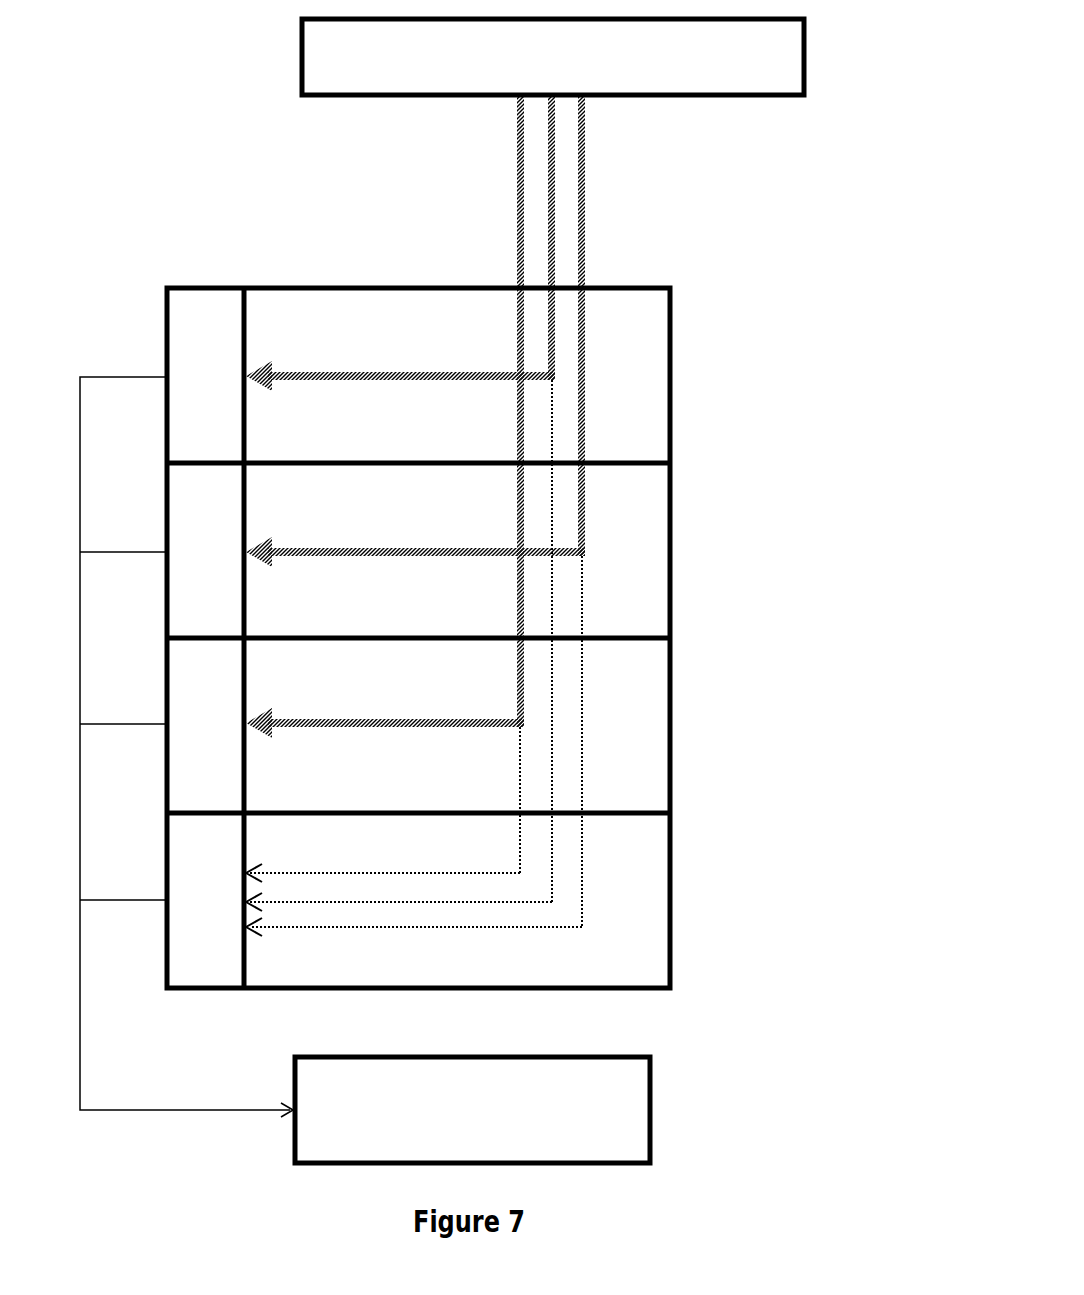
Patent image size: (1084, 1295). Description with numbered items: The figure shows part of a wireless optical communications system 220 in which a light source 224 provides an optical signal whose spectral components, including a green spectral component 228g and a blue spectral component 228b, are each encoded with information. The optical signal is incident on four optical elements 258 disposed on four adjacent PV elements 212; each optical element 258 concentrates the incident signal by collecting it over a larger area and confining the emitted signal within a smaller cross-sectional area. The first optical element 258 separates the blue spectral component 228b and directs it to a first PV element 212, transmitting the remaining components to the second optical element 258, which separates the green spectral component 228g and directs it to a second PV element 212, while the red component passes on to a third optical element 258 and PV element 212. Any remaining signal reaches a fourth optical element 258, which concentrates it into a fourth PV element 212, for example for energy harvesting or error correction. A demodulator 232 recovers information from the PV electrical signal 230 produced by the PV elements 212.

The light source 224 is at (807, 43).
The wireless optical communications system 220 is at (832, 212).
The blue spectral component 228b is at (516, 204).
The green spectral component 228g is at (586, 181).
The PV element 212 is at (167, 313).
The optical element 258 is at (657, 367).
The PV electrical signal 230 is at (80, 1040).
The demodulator 232 is at (652, 1090).